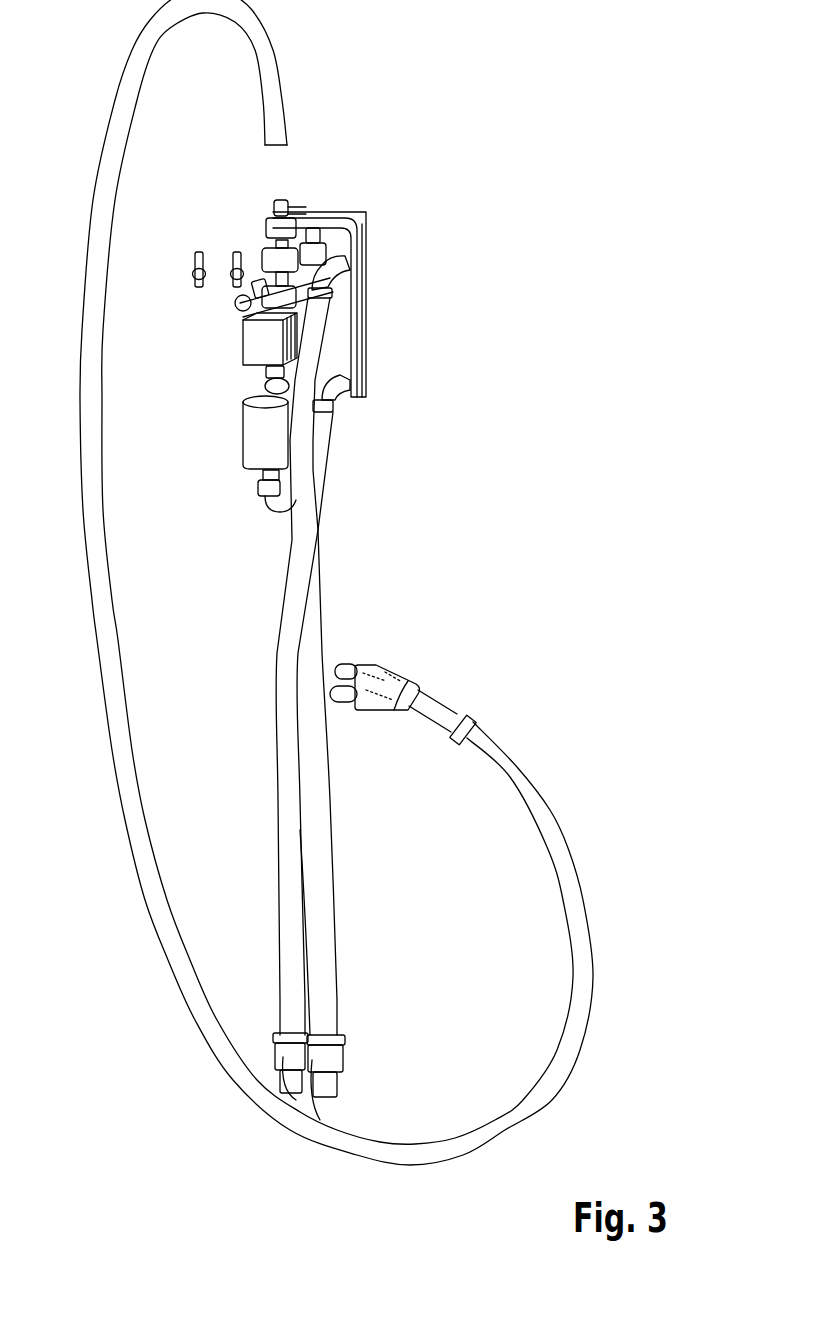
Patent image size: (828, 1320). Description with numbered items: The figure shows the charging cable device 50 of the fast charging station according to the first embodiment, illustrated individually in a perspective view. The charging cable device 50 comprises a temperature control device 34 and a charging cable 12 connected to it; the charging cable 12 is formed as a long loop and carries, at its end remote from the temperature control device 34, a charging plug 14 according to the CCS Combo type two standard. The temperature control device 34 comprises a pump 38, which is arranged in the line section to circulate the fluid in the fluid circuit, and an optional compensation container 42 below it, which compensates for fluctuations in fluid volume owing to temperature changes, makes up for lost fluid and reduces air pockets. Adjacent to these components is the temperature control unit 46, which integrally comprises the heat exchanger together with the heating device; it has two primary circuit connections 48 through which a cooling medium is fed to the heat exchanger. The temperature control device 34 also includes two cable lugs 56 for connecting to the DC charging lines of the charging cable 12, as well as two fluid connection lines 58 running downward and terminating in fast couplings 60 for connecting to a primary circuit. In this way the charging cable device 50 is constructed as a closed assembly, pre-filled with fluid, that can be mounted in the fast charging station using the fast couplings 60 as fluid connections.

The charging cable 12 is at (150, 878).
The charging plug 14 is at (375, 665).
The temperature control device 34 is at (200, 393).
The pump 38 is at (250, 345).
The compensation container 42 is at (255, 437).
The temperature control unit 46 is at (343, 338).
The primary circuit connections 48 is at (350, 265).
The charging cable device 50 is at (423, 213).
The cable lugs 56 is at (228, 248).
The fluid connection lines 58 is at (290, 910).
The fast couplings 60 is at (270, 1065).